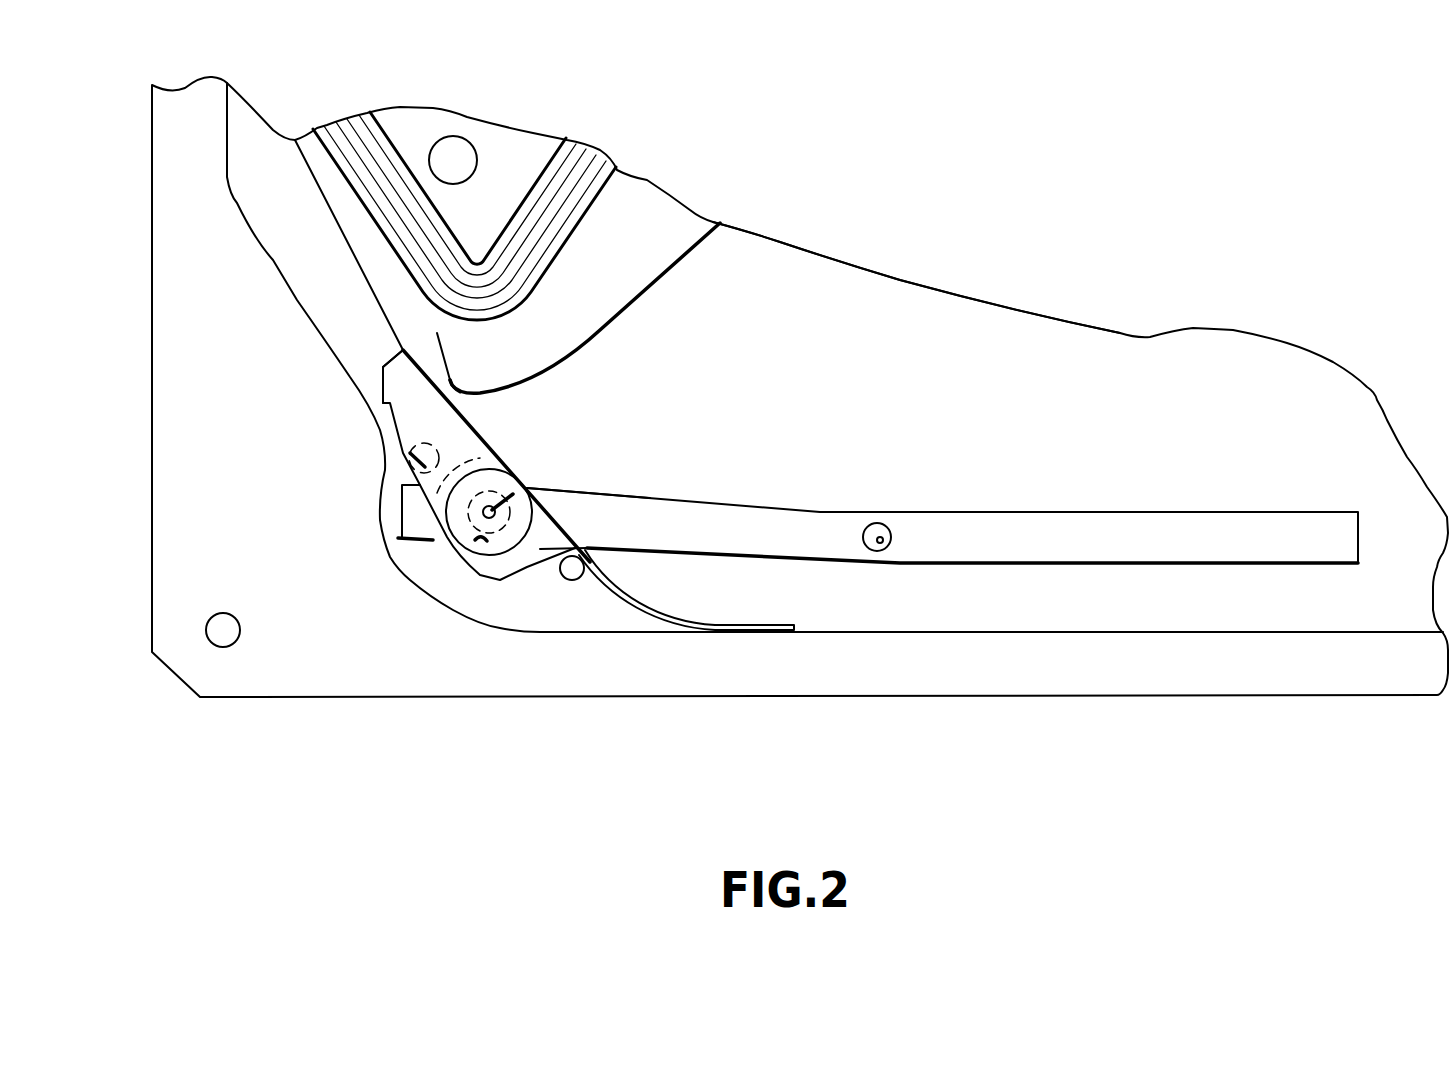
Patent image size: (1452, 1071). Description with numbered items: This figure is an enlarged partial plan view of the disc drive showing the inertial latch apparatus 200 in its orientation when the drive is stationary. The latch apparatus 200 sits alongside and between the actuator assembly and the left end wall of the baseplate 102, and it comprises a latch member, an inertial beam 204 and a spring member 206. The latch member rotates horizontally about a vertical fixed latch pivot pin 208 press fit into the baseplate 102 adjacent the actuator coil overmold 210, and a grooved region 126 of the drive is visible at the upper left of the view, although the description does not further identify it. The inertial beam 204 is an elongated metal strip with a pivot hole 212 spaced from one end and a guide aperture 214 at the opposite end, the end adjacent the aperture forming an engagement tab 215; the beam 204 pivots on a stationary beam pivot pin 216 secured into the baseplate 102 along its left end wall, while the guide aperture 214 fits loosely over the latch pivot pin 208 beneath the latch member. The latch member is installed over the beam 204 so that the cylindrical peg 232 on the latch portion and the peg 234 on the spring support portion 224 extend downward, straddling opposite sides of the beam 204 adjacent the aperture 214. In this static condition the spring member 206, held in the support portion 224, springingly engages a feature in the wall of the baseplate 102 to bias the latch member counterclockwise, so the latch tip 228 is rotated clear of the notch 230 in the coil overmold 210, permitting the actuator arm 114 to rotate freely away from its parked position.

The baseplate 102 is at (920, 698).
The actuator arm 114 is at (660, 300).
The grooved channel 126 is at (352, 136).
The inertial latch apparatus 200 is at (778, 503).
The inertial beam 204 is at (1060, 508).
The spring member 206 is at (723, 623).
The latch pivot pin 208 is at (513, 494).
The actuator coil overmold 210 is at (550, 303).
The pivot hole 212 is at (887, 547).
The guide aperture 214 is at (487, 547).
The engagement tab 215 is at (410, 518).
The beam pivot pin 216 is at (874, 530).
The spring support portion 224 is at (560, 532).
The latch tip 228 is at (397, 376).
The notch 230 is at (426, 338).
The cylindrical peg 232 is at (403, 455).
The peg 234 is at (540, 549).